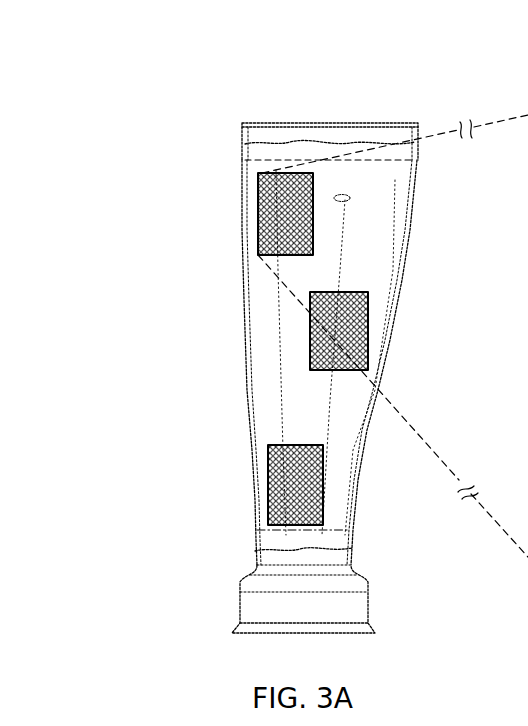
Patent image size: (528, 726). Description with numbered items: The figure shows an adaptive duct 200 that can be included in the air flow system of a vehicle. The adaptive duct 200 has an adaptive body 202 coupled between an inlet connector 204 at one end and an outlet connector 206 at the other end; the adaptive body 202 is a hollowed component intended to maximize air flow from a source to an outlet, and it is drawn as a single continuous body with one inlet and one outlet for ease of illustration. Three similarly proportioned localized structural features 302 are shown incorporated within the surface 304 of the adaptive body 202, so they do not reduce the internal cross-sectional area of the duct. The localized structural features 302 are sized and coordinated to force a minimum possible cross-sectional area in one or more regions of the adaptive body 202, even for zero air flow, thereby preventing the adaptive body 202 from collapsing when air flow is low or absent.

The adaptive duct 200 is at (132, 88).
The adaptive body 202 is at (270, 353).
The inlet connector 204 is at (342, 608).
The outlet connector 206 is at (263, 133).
The localized structural features 302 is at (263, 221).
The surface 304 is at (342, 196).